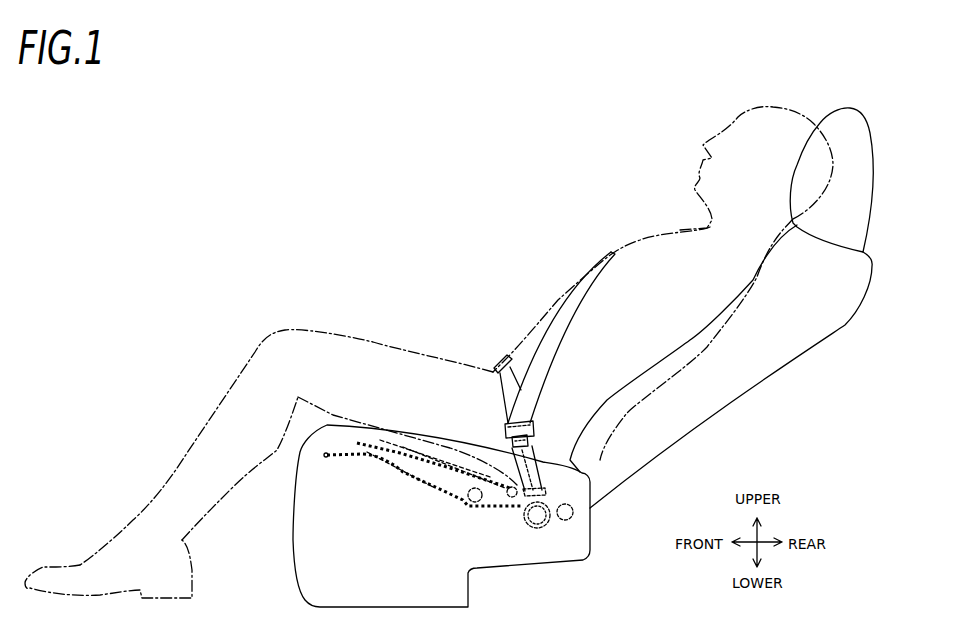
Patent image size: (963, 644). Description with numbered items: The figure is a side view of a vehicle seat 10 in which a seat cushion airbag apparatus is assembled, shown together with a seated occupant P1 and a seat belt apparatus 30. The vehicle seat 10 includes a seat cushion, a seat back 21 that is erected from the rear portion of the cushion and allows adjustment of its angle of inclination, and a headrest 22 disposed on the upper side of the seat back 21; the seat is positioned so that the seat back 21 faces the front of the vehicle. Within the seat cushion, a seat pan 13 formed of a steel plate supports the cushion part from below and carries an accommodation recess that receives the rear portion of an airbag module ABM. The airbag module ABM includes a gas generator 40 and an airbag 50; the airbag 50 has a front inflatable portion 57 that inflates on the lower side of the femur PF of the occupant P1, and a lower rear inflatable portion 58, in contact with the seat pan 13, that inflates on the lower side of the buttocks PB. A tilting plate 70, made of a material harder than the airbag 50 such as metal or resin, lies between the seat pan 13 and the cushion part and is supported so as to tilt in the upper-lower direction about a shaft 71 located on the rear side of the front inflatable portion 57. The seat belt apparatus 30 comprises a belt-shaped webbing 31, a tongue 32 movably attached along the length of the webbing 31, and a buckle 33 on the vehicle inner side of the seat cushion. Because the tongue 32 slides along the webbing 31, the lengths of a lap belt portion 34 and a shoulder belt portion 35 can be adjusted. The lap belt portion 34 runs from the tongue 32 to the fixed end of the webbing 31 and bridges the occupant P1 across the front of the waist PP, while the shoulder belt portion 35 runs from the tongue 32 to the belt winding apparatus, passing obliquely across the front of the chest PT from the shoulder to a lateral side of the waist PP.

The vehicle seat 10 is at (635, 569).
The seat pan 13 is at (340, 458).
The seat back 21 is at (757, 382).
The headrest 22 is at (863, 122).
The seat belt apparatus 30 is at (524, 386).
The webbing 31 is at (524, 337).
The tongue 32 is at (533, 425).
The buckle 33 is at (507, 440).
The lap belt portion 34 is at (495, 376).
The shoulder belt portion 35 is at (553, 322).
The gas generator 40 is at (545, 488).
The airbag 50 is at (454, 472).
The front inflatable portion 57 is at (433, 477).
The lower rear inflatable portion 58 is at (467, 503).
The tilting plate 70 is at (403, 447).
The shaft 71 is at (507, 498).
The airbag module ABM is at (522, 522).
The occupant P1 is at (735, 119).
The chest PT is at (593, 265).
The femur PF is at (403, 352).
The waist PP is at (610, 440).
The buttocks PB is at (578, 483).